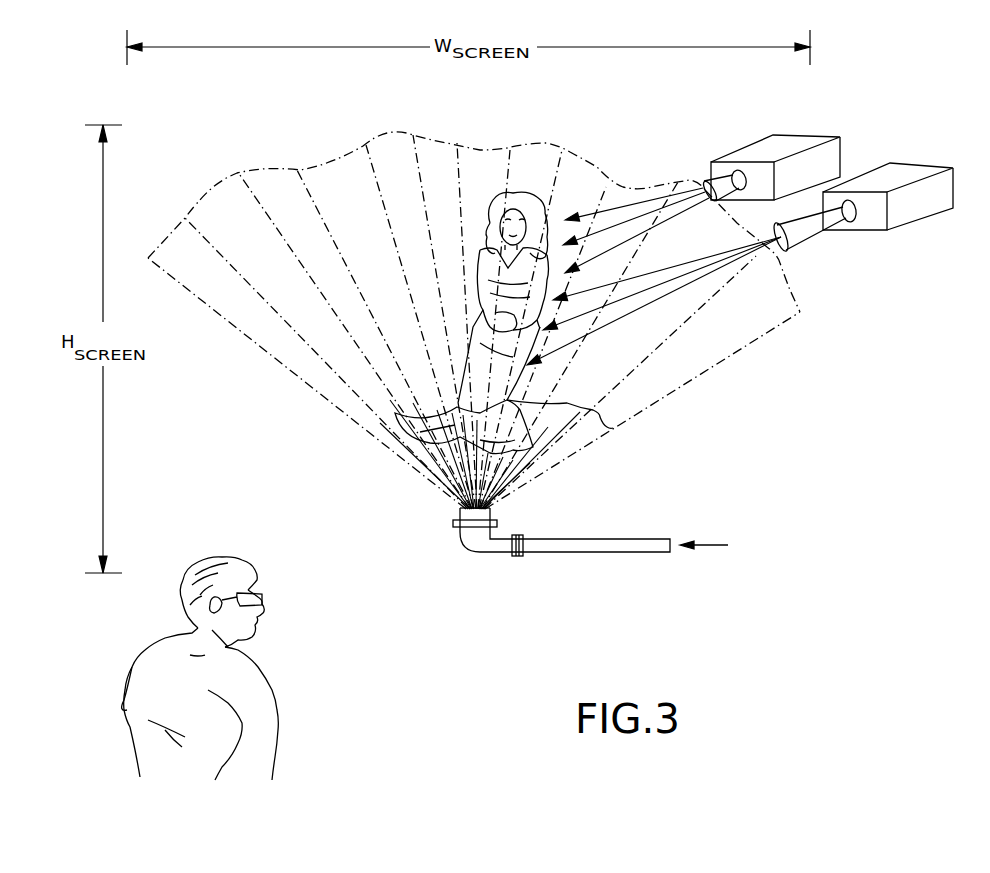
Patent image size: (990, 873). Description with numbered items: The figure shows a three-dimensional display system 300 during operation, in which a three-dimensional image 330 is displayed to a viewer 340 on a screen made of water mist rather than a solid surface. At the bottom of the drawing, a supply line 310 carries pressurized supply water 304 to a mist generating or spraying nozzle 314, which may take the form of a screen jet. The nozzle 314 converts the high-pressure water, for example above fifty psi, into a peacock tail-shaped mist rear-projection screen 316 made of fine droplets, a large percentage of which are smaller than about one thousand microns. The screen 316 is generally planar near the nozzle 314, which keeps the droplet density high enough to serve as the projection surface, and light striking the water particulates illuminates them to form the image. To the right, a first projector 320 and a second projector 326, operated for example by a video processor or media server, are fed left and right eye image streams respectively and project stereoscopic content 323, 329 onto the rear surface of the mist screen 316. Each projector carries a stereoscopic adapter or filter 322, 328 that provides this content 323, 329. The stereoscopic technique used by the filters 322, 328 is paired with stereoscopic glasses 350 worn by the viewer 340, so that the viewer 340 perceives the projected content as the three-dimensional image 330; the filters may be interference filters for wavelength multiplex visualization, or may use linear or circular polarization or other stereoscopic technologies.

The 3D display system 300 is at (915, 116).
The water supply 304 is at (817, 580).
The supply line 310 is at (567, 551).
The nozzle 314 is at (455, 519).
The mist RP screen 316 is at (586, 451).
The first projector 320 is at (770, 140).
The 3D adapter/filter 322 is at (726, 163).
The 3D content 323 is at (700, 186).
The second projector 326 is at (940, 170).
The 3D adapter/filter 328 is at (862, 220).
The 3D content 329 is at (796, 248).
The 3D image 330 is at (613, 428).
The viewer 340 is at (194, 695).
The 3D glasses 350 is at (262, 600).